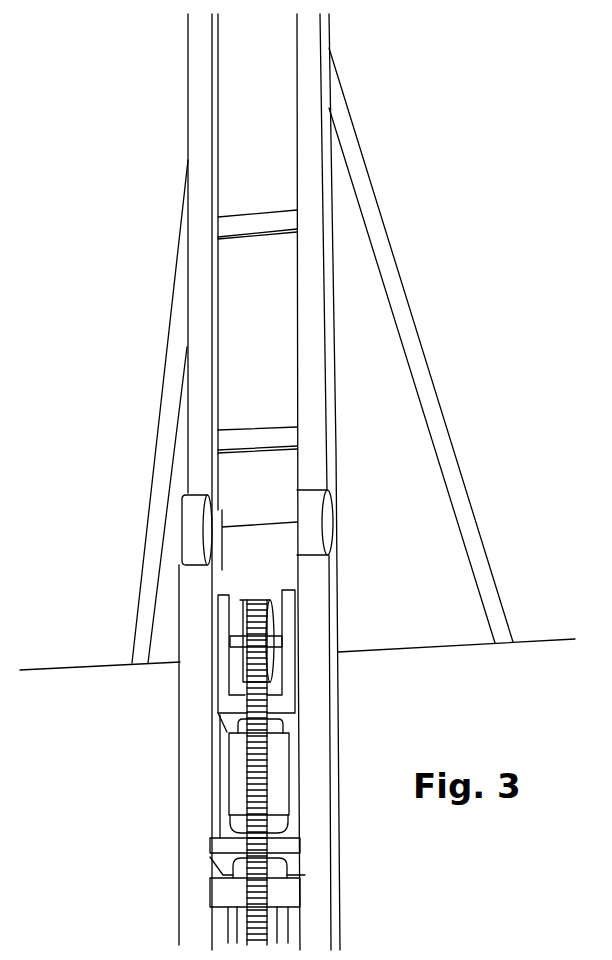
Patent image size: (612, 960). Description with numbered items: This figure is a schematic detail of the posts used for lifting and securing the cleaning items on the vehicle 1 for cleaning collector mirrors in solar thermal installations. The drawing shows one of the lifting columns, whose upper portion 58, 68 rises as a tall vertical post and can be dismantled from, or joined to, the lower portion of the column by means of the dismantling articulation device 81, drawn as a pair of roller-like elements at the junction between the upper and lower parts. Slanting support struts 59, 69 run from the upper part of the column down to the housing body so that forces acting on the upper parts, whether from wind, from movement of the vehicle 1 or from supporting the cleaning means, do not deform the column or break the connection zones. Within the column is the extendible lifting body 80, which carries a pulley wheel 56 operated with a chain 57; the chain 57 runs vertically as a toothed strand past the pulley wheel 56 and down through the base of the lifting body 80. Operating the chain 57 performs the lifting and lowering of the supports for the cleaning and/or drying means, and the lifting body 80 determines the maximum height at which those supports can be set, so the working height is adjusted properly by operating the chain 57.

The vehicle 1 is at (132, 717).
The pulley wheel 56 is at (263, 640).
The chain 57 is at (257, 897).
The upper portion of lifting column 58 is at (395, 482).
The upper portion of lifting column 68 is at (313, 176).
The support strut 59 is at (433, 345).
The support strut 69 is at (410, 345).
The extendible lifting body 80 is at (277, 793).
The dismantling articulation device 81 is at (338, 533).